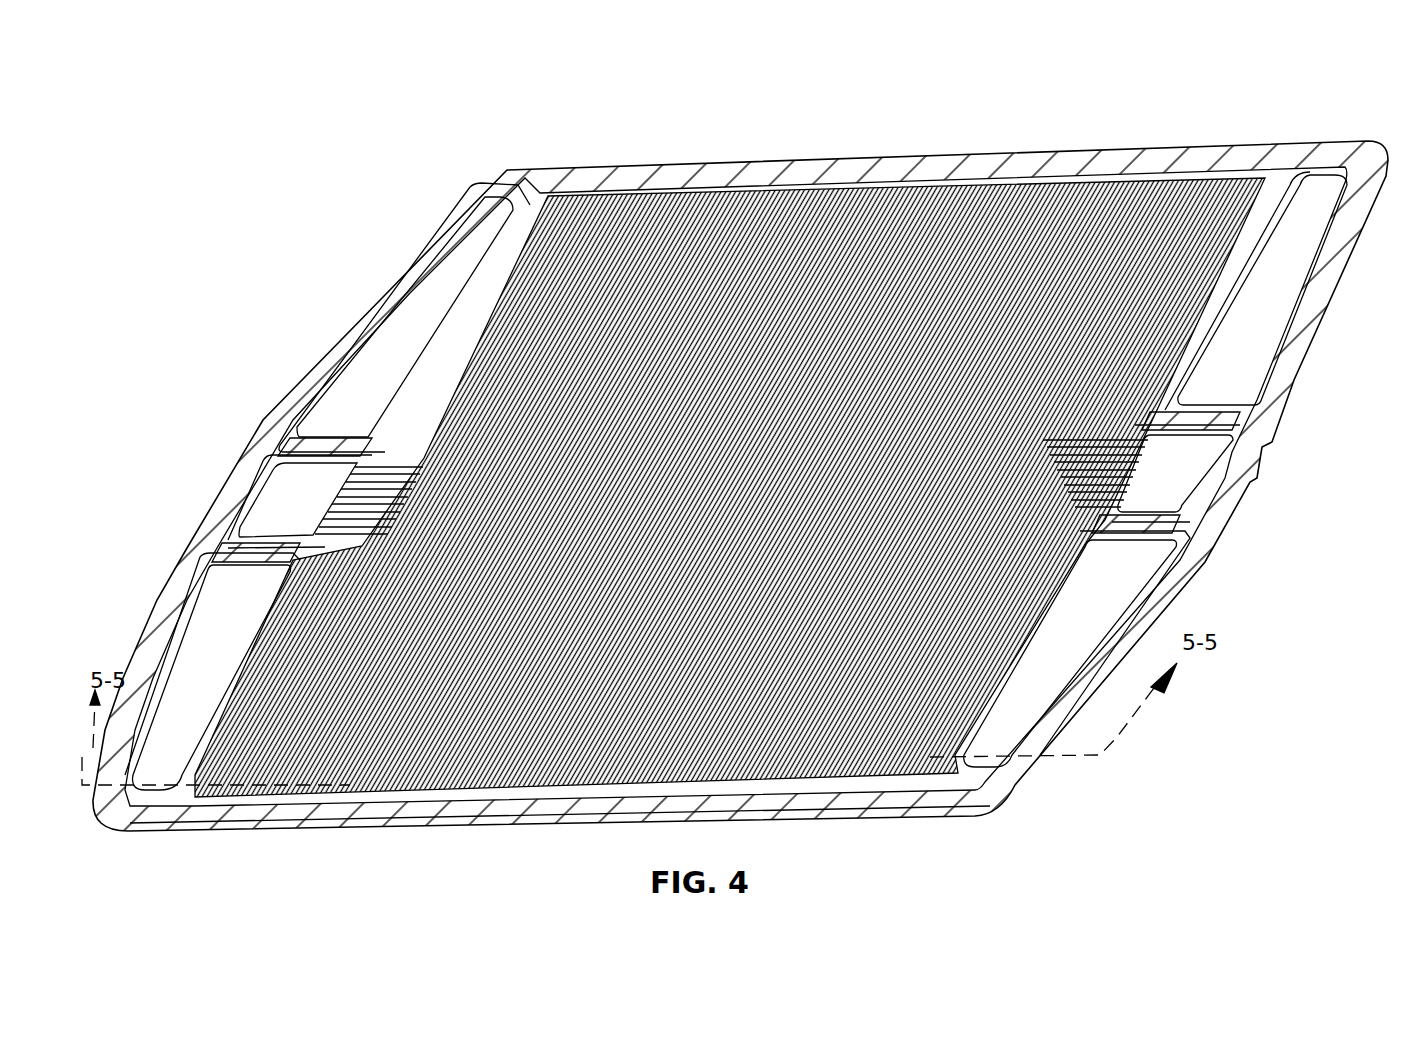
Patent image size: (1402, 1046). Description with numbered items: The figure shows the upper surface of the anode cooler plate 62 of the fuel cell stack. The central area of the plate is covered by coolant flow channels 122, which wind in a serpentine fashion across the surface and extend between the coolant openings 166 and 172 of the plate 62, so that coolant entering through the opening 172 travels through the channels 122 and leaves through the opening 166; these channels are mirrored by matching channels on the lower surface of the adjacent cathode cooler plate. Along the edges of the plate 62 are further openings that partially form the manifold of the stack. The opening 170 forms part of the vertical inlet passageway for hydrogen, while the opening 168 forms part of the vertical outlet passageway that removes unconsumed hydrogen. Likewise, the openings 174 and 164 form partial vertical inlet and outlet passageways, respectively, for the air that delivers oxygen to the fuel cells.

The anode cooler plate 62 is at (1160, 128).
The coolant flow channels 122 is at (1073, 207).
The opening 164 is at (1083, 610).
The opening 166 is at (1182, 490).
The opening 168 is at (1265, 347).
The opening 170 is at (156, 754).
The opening 172 is at (293, 515).
The opening 174 is at (395, 355).